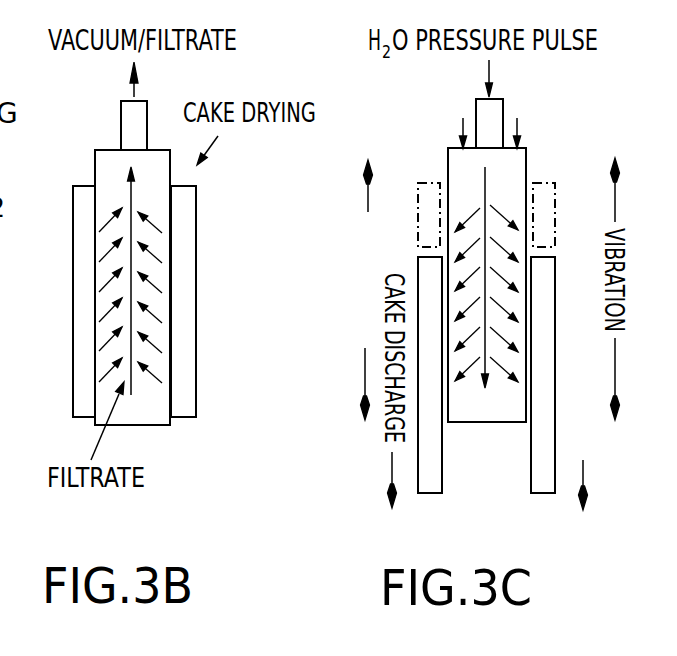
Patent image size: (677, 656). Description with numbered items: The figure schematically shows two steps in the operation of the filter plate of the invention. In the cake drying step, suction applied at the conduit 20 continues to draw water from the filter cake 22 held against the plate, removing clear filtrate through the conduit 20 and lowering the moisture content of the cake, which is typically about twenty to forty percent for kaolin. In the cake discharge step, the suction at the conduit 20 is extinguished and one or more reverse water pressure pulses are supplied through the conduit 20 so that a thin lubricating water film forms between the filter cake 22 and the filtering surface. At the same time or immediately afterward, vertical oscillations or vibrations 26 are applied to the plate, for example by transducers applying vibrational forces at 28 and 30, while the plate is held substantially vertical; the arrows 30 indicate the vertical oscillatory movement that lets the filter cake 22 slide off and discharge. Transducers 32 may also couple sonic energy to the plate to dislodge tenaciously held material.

In FIG. 3B, the conduit 20 is at (121, 118).
In FIG. 3C, the conduit 20 is at (476, 109).
In FIG. 3B, the filter cake 22 is at (196, 237).
In FIG. 3C, the filter cake 22 is at (557, 258).
In FIG. 3C, the vertical oscillations or vibrations 26 is at (352, 296).
In FIG. 3C, the transducer vibrational force 28 is at (462, 128).
In FIG. 3C, the arrows of vertical oscillatory movement 30 is at (517, 124).
In FIG. 3C, the transducers 32 is at (623, 389).